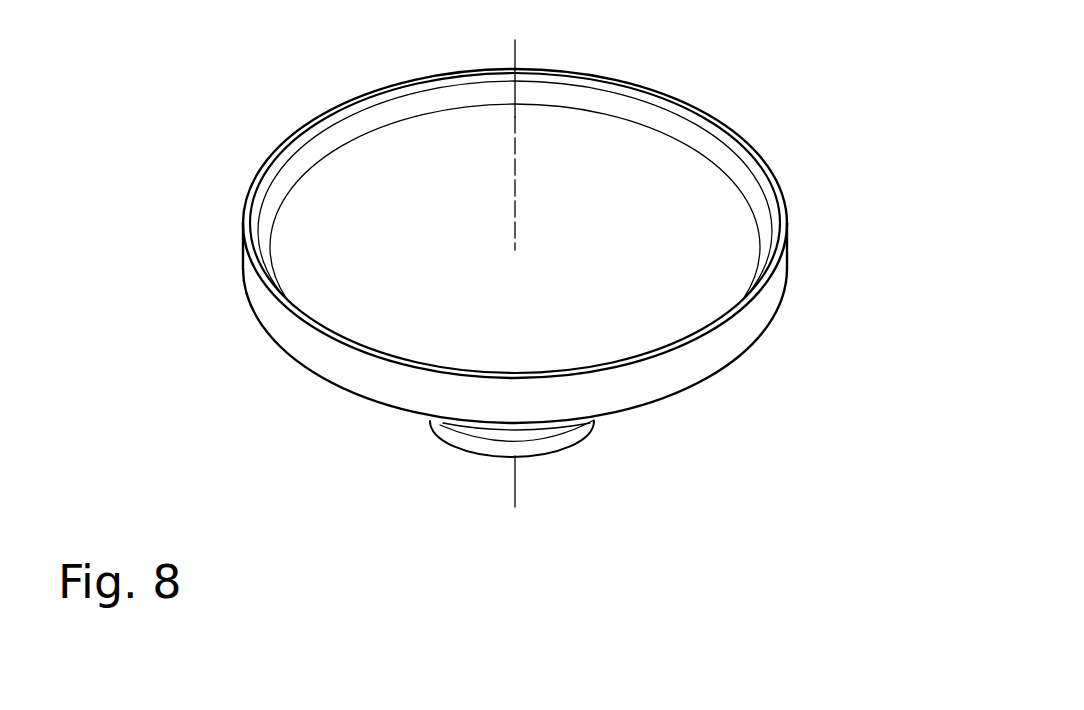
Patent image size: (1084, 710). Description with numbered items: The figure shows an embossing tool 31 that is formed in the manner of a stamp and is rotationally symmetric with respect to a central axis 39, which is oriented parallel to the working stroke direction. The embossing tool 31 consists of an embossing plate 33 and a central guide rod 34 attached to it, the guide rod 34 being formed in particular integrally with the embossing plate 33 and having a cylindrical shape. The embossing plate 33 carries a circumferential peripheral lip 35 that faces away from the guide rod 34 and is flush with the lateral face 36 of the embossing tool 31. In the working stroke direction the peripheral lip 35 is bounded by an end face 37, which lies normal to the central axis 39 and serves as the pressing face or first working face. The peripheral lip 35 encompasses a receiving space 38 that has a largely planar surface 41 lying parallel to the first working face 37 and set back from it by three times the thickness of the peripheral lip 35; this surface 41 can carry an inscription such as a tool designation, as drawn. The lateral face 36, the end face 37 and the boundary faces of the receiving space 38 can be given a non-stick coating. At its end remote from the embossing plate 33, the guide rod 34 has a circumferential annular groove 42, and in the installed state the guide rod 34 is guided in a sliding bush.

The embossing tool 31 is at (222, 277).
The embossing plate 33 is at (787, 259).
The guide rod 34 is at (542, 450).
The peripheral lip 35 is at (320, 142).
The lateral face 36 is at (607, 391).
The end face 37 is at (252, 187).
The receiving space 38 is at (289, 218).
The central axis 39 is at (515, 55).
The surface 41 is at (652, 180).
The annular groove 42 is at (532, 439).